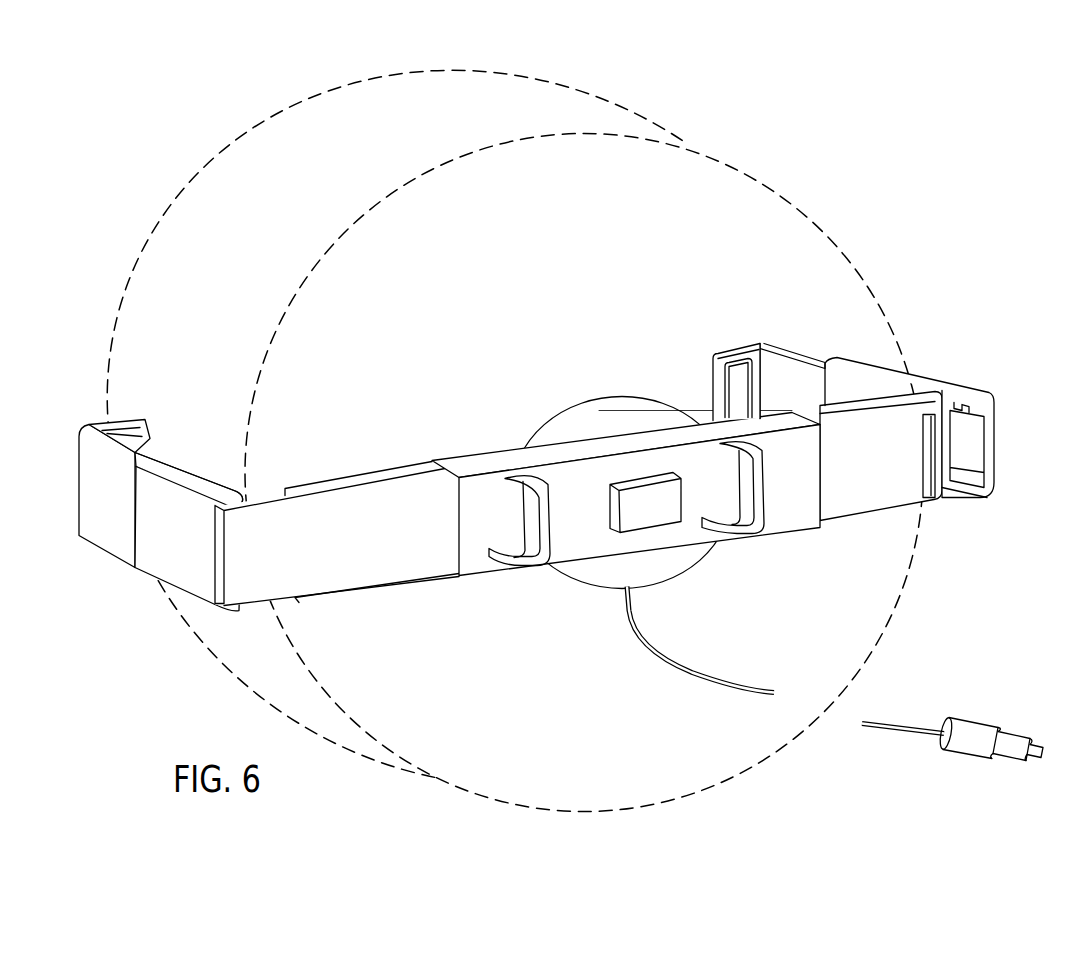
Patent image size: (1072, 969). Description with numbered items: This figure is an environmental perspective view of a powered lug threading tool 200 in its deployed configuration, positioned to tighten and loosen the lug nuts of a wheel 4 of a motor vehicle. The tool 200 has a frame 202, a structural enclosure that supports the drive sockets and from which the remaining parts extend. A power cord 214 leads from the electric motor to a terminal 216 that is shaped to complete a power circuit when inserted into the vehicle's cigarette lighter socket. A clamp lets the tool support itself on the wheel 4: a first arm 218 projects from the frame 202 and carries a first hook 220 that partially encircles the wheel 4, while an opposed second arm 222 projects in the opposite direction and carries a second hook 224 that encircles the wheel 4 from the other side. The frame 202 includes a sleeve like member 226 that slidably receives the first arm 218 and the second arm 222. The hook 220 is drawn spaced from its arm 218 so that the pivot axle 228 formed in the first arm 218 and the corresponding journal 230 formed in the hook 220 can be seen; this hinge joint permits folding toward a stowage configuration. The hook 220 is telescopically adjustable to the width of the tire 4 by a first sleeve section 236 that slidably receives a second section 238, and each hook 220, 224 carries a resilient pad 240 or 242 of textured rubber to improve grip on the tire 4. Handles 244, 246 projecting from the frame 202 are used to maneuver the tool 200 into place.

The wheel 4 is at (763, 185).
The powered lug threading tool 200 is at (977, 187).
The frame 202 is at (468, 444).
The power cord 214 is at (652, 656).
The terminal 216 is at (998, 778).
The first arm 218 is at (868, 523).
The first hook 220 is at (913, 308).
The second arm 222 is at (352, 621).
The second hook 224 is at (167, 372).
The sleeve like member 226 is at (709, 556).
The pivot axle 228 is at (937, 463).
The journal 230 is at (977, 447).
The first sleeve section 236 is at (948, 392).
The second section 238 is at (783, 347).
The resilient pad 240 is at (731, 373).
The resilient pad 242 is at (140, 437).
The handle 244 is at (505, 533).
The handle 246 is at (753, 497).